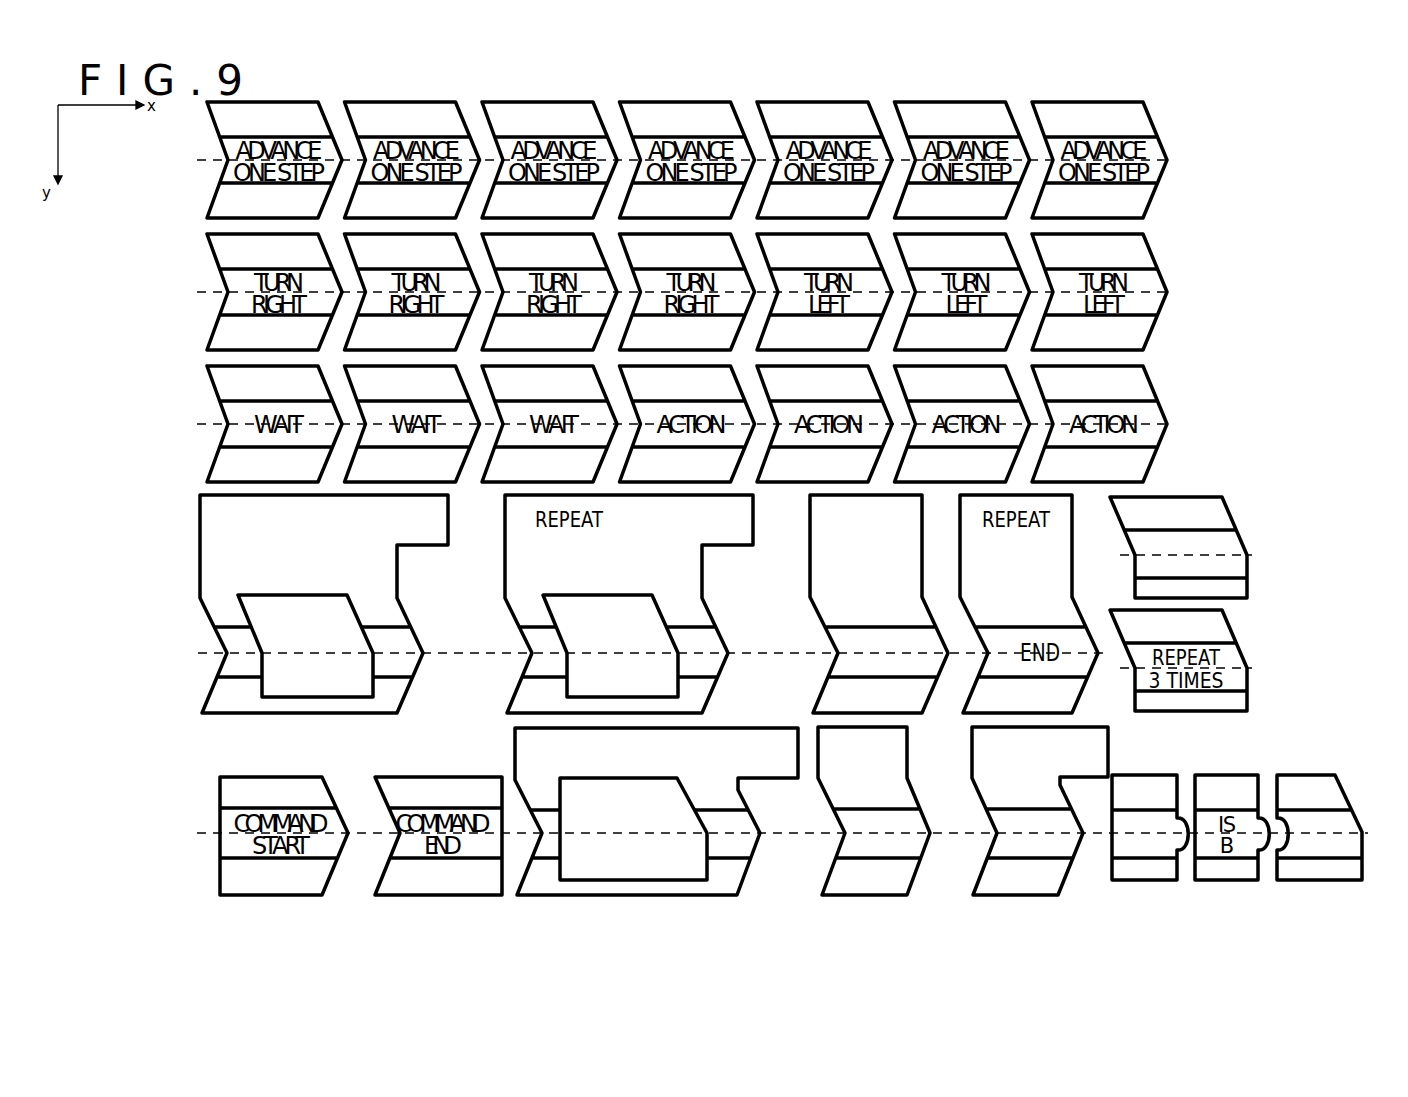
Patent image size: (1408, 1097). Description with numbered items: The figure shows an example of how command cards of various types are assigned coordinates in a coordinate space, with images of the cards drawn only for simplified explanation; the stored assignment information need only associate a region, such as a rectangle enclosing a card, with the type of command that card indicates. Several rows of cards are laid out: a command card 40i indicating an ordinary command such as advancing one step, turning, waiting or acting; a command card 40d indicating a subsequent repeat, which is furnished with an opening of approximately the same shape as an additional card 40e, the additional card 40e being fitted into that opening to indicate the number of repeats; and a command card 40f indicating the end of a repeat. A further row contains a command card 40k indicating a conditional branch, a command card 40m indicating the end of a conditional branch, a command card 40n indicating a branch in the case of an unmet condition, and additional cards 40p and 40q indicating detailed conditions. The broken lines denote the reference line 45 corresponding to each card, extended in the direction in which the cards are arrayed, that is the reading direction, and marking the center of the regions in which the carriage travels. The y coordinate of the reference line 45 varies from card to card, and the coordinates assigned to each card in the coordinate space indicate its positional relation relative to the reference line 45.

The command card indicating a subsequent repeat 40d is at (217, 552).
The additional card 40e is at (1215, 512).
The command card indicating the end of a repeat 40f is at (833, 580).
The command card indicating an ordinary command 40i is at (290, 111).
The command card indicating a conditional branch 40k is at (540, 888).
The command card indicating the end of a conditional branch 40m is at (872, 887).
The command card indicating a branch in the case of an unmet condition 40n is at (1028, 887).
The additional card indicating a detailed condition 40p is at (1147, 872).
The additional card indicating a detailed condition 40q is at (1322, 872).
The reference line 45 is at (1393, 808).